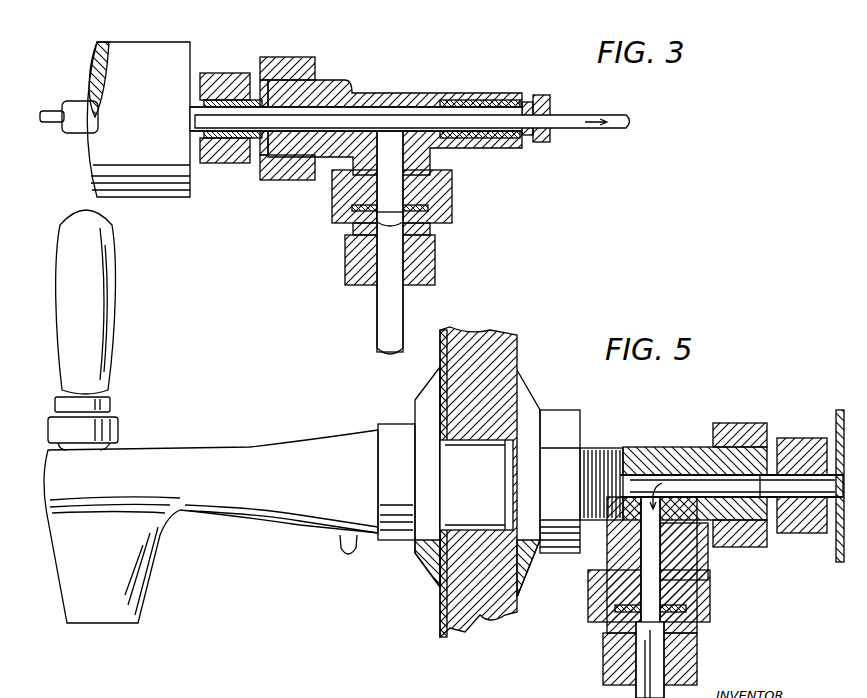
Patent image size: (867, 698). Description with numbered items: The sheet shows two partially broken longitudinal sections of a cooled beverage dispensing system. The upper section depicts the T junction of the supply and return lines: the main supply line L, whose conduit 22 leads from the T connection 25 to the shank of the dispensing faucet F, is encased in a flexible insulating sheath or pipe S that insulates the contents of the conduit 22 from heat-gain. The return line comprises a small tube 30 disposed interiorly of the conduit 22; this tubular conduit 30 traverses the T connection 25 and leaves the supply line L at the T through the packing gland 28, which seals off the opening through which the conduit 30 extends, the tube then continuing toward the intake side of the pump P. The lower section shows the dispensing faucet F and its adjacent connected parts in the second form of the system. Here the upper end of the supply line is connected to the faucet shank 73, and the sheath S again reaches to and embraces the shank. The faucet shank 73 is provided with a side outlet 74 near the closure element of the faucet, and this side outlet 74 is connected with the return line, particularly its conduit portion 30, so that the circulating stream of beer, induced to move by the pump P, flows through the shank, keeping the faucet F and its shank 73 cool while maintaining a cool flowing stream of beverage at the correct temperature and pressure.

In FIG. 3, the conduit 22 is at (73, 101).
In FIG. 3, the insulating sheath S is at (184, 42).
In FIG. 5, the insulating sheath S is at (840, 410).
In FIG. 3, the T connection 25 is at (465, 93).
In FIG. 3, the packing gland 28 is at (546, 97).
In FIG. 3, the tube 30 is at (364, 113).
In FIG. 5, the tube 30 is at (690, 696).
In FIG. 3, the main supply line L is at (405, 302).
In FIG. 5, the main supply line L is at (828, 532).
In FIG. 5, the dispensing faucet F is at (248, 446).
In FIG. 5, the faucet shank 73 is at (660, 447).
In FIG. 5, the side outlet 74 is at (680, 532).
In FIG. 5, the pump P is at (636, 690).